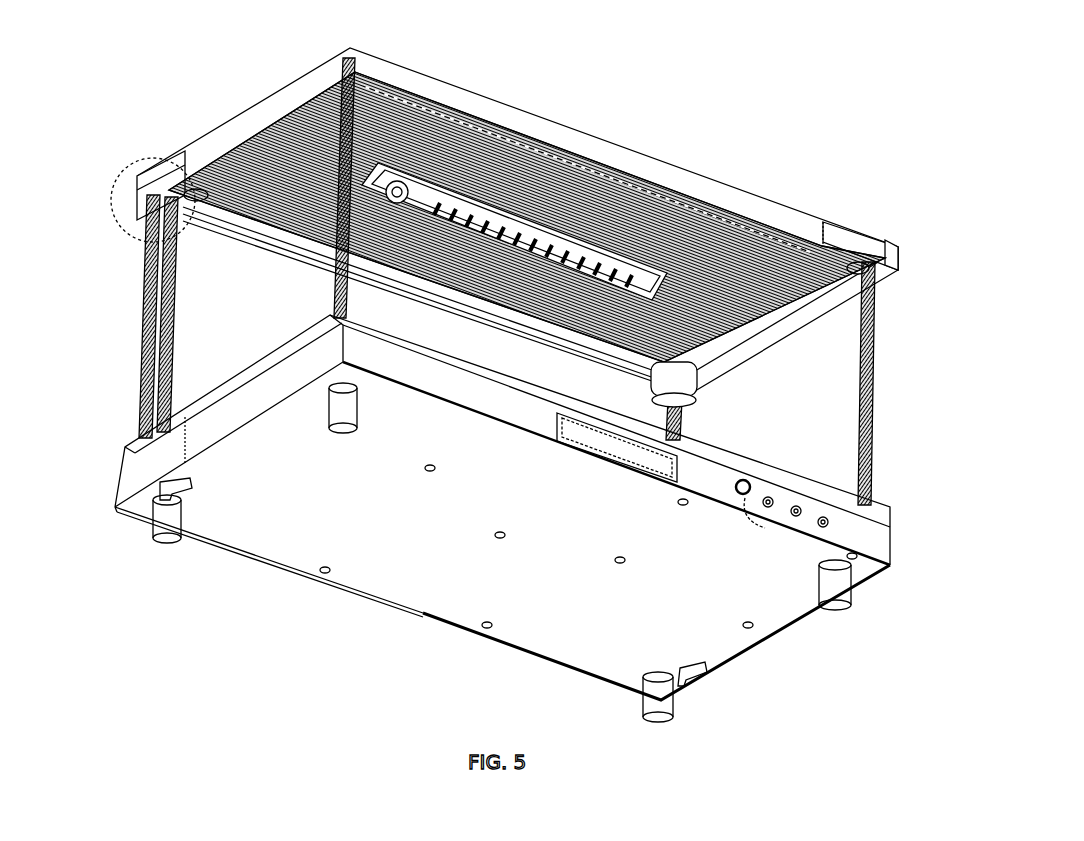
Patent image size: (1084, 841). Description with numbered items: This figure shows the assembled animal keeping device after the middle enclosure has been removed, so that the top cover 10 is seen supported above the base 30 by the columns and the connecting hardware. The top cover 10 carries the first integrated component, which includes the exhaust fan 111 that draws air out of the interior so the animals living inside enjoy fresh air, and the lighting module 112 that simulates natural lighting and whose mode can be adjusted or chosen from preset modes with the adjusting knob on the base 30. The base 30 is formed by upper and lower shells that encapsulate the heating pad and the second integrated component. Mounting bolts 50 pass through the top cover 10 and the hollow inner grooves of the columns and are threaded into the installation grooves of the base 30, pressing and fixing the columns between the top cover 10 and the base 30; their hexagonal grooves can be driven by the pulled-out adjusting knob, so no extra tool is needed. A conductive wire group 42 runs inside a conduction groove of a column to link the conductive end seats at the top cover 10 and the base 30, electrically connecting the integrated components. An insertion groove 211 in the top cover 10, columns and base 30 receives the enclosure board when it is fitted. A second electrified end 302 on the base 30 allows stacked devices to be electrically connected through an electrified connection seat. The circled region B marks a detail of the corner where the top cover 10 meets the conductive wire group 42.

The top cover 10 is at (790, 217).
The exhaust fan 111 is at (445, 115).
The lighting module 112 is at (560, 145).
The insertion groove 211 is at (680, 190).
The conductive wire group 42 is at (165, 300).
The mounting bolt 50 is at (145, 362).
The second electrified end 302 is at (165, 483).
The base 30 is at (892, 520).
The detail region B is at (140, 165).